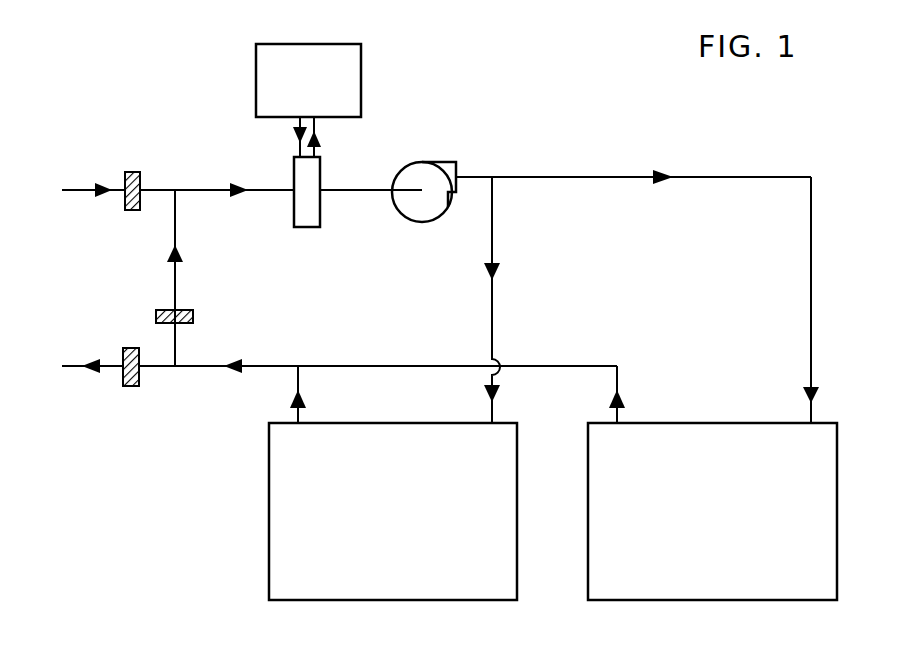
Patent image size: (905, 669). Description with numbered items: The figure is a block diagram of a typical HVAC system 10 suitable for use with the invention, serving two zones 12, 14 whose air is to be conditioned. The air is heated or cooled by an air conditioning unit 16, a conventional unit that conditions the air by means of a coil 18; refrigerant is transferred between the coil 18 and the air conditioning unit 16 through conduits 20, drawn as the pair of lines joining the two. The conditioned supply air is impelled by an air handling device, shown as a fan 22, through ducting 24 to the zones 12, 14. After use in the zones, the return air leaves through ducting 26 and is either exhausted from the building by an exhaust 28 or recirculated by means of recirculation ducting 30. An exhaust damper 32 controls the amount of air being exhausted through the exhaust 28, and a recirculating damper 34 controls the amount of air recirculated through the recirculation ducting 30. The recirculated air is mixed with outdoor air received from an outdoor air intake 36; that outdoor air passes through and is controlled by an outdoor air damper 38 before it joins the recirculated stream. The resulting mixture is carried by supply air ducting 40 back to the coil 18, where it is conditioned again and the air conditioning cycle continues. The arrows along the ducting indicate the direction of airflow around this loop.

The HVAC system 10 is at (160, 467).
The zone 12 is at (403, 527).
The zone 14 is at (728, 527).
The air conditioning unit 16 is at (321, 89).
The coil 18 is at (310, 204).
The conduits 20 is at (298, 143).
The fan 22 is at (432, 172).
The ducting 24 is at (614, 176).
The ducting 26 is at (408, 365).
The exhaust 28 is at (65, 370).
The recirculation ducting 30 is at (178, 271).
The exhaust damper 32 is at (134, 346).
The recirculating damper 34 is at (193, 319).
The outdoor air intake 36 is at (64, 191).
The outdoor air damper 38 is at (139, 174).
The supply air ducting 40 is at (211, 191).